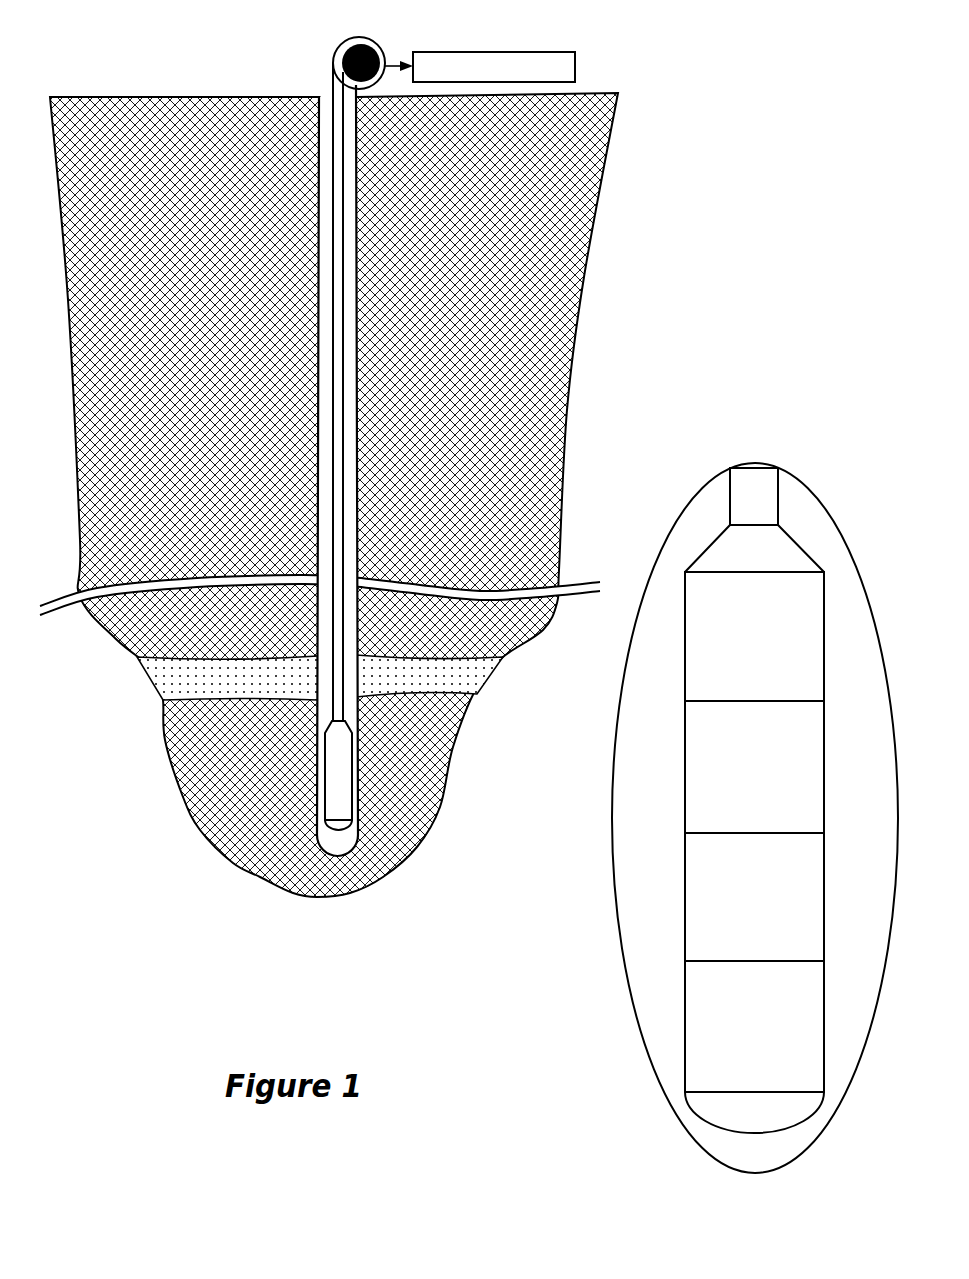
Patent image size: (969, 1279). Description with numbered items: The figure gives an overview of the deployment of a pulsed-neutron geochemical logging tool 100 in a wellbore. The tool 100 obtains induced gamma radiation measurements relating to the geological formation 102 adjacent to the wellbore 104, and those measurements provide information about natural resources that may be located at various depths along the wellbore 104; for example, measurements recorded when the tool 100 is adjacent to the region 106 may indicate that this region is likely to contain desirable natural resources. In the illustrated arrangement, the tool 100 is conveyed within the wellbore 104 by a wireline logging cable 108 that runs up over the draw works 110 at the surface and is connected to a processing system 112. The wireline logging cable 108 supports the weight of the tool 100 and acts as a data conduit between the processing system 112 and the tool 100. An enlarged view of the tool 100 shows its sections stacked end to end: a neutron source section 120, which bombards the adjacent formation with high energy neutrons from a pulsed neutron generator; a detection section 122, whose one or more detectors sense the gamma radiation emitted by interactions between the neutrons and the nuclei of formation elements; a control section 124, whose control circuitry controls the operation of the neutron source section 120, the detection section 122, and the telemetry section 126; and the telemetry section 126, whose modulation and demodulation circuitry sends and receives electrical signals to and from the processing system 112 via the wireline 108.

The pulsed-neutron geochemical logging tool 100 is at (360, 773).
The geological formation 102 is at (230, 155).
The wellbore 104 is at (323, 97).
The region 106 is at (465, 682).
The wireline logging cable 108 is at (334, 432).
The draw works 110 is at (364, 44).
The processing system 112 is at (557, 52).
The neutron source section 120 is at (754, 1026).
The detection section 122 is at (754, 897).
The control section 124 is at (754, 767).
The telemetry section 126 is at (754, 636).